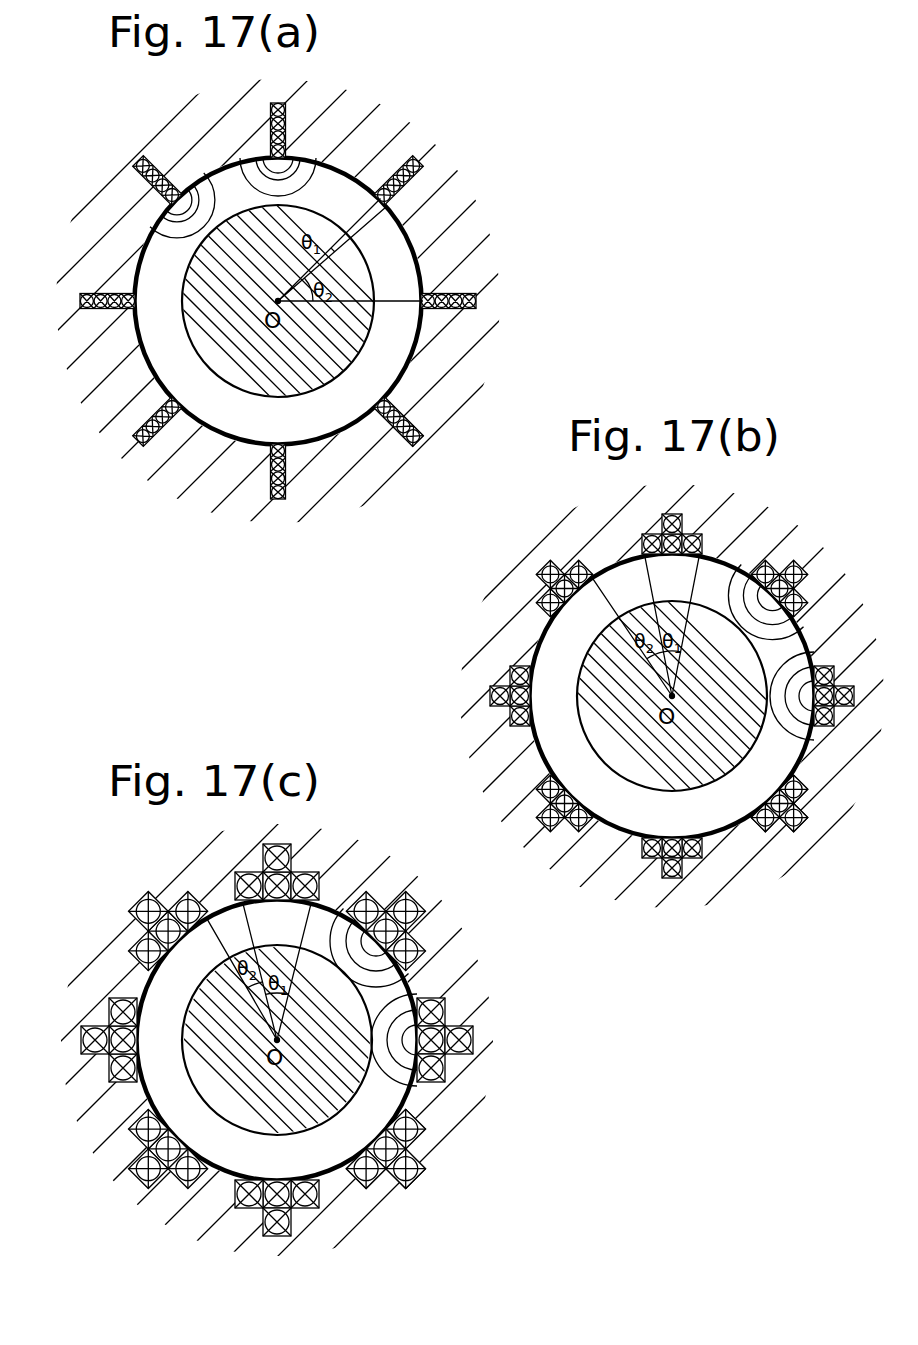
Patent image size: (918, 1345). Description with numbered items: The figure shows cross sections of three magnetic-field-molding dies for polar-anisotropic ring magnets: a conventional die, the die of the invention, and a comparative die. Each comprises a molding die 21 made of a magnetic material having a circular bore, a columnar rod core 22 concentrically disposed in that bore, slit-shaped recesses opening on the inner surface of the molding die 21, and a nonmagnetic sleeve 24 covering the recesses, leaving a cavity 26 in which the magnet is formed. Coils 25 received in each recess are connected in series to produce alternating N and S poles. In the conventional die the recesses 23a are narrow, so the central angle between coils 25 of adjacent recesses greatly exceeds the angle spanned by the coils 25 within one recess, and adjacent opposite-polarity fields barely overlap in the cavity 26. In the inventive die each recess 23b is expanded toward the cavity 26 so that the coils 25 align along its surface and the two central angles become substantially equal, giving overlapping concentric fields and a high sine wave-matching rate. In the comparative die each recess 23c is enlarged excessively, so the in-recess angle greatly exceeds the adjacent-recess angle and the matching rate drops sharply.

In FIG. 17A, the molding die 21 is at (313, 490).
In FIG. 17B, the molding die 21 is at (655, 885).
In FIG. 17C, the molding die 21 is at (450, 1100).
In FIG. 17A, the columnar rod core 22 is at (340, 318).
In FIG. 17B, the columnar rod core 22 is at (608, 748).
In FIG. 17C, the columnar rod core 22 is at (200, 1013).
In FIG. 17A, the slit-shaped recess 23a is at (145, 442).
In FIG. 17B, the slit-shaped recess 23b is at (710, 855).
In FIG. 17C, the slit-shaped recess 23c is at (163, 1170).
In FIG. 17A, the nonmagnetic sleeve 24 is at (128, 396).
In FIG. 17B, the nonmagnetic sleeve 24 is at (600, 832).
In FIG. 17C, the nonmagnetic sleeve 24 is at (120, 1088).
In FIG. 17A, the coil 25 is at (408, 428).
In FIG. 17B, the coil 25 is at (815, 810).
In FIG. 17C, the coil 25 is at (405, 1168).
In FIG. 17A, the cavity 26 is at (135, 262).
In FIG. 17B, the cavity 26 is at (537, 655).
In FIG. 17C, the cavity 26 is at (307, 1157).